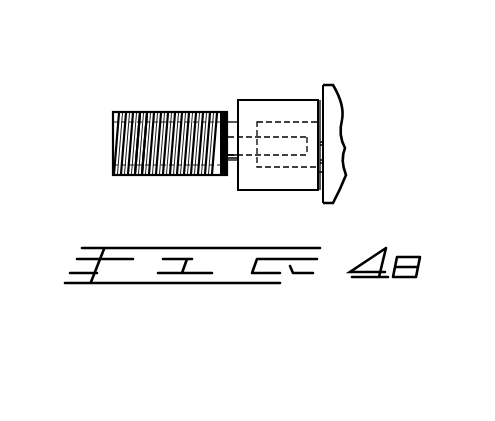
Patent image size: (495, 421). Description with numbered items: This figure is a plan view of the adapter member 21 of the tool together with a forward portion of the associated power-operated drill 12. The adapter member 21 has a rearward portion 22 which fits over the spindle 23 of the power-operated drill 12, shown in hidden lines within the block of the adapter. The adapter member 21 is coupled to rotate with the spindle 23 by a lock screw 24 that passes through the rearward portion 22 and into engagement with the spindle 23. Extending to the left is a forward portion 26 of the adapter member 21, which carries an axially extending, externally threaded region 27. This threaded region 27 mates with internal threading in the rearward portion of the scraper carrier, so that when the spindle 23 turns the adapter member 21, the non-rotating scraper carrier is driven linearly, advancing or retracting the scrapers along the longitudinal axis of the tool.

The power-operated drill 12 is at (333, 112).
The adapter member 21 is at (253, 110).
The rearward portion 22 is at (289, 108).
The spindle 23 is at (312, 157).
The lock screw 24 is at (248, 150).
The forward portion 26 is at (180, 122).
The externally threaded region 27 is at (132, 118).